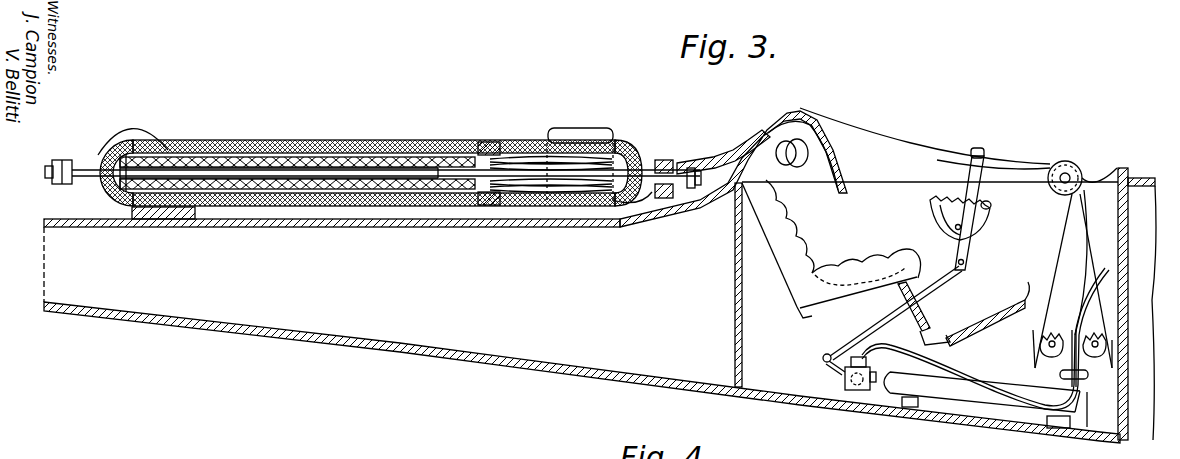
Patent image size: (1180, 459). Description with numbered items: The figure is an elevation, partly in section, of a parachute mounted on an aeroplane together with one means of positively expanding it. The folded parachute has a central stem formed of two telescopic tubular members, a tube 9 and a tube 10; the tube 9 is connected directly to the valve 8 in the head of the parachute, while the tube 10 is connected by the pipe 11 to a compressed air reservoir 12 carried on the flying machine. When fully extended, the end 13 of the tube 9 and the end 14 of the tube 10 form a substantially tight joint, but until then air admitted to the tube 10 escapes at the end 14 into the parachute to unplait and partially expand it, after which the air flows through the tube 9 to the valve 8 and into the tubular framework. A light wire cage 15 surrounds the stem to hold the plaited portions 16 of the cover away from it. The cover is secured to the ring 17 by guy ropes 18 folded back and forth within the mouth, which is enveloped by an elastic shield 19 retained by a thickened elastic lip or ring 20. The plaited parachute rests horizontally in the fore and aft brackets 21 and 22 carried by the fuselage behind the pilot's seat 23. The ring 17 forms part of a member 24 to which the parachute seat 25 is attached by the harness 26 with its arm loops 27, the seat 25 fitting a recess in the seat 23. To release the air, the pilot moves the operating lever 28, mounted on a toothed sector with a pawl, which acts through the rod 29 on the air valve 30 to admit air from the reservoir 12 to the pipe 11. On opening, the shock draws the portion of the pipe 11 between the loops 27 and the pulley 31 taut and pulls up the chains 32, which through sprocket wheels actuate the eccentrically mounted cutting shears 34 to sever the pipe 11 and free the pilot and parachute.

The valve 8 is at (88, 185).
The tube 9 is at (122, 208).
The tube 10 is at (465, 175).
The pipe 11 is at (903, 152).
The compressed air reservoir 12 is at (960, 398).
The end of tube 9 13 is at (457, 210).
The end of tube 10 14 is at (168, 152).
The wire cage 15 is at (310, 160).
The plaited portions 16 is at (355, 147).
The ring 17 is at (635, 200).
The guy ropes 18 is at (610, 200).
The elastic shield 19 is at (543, 143).
The elastic lip or ring 20 is at (488, 148).
The fore bracket 21 is at (607, 140).
The aft bracket 22 is at (128, 130).
The pilot's seat 23 is at (810, 243).
The member 24 is at (672, 180).
The parachute seat 25 is at (893, 258).
The harness 26 is at (838, 160).
The arm loops 27 is at (807, 173).
The operating lever 28 is at (978, 158).
The rod 29 is at (930, 280).
The air valve 30 is at (845, 380).
The pulley 31 is at (1065, 175).
The chains 32 is at (1035, 358).
The cutting shears 34 is at (1067, 357).